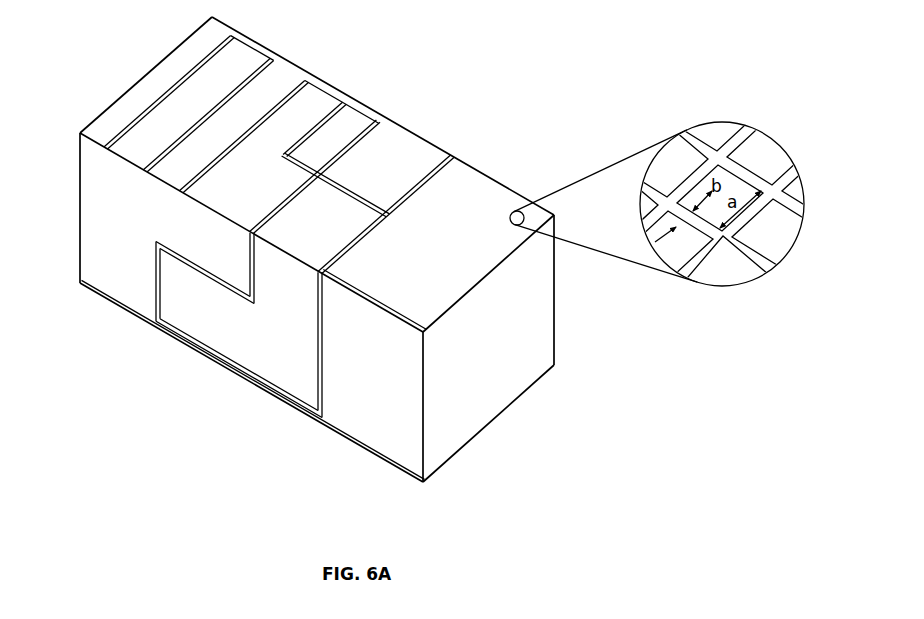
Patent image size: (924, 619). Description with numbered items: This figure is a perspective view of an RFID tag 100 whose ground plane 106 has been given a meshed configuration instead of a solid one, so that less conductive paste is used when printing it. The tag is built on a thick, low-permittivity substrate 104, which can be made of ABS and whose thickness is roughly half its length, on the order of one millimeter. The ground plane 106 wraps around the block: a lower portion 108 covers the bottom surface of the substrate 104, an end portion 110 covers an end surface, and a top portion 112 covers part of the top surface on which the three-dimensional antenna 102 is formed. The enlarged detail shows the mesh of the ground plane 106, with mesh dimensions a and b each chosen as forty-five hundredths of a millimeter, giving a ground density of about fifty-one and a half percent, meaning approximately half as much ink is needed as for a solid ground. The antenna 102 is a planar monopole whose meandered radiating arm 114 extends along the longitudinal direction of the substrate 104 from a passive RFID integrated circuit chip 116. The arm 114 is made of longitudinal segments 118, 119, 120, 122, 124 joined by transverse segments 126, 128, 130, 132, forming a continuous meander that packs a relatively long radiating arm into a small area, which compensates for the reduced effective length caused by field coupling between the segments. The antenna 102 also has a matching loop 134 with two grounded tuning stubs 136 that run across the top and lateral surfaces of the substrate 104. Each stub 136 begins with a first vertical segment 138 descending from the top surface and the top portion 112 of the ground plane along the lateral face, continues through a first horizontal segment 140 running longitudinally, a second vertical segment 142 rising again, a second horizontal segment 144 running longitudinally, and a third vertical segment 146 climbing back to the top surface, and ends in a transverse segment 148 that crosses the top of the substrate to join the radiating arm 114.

The RFID tag 100 is at (516, 112).
The three-dimensional antenna 102 is at (143, 229).
The substrate 104 is at (349, 435).
The ground plane 106 is at (541, 420).
The lower portion of ground plane 108 is at (410, 478).
The end portion of ground plane 110 is at (454, 446).
The top portion of ground plane 112 is at (460, 277).
The meandered radiating arm 114 is at (325, 80).
The passive RFID integrated circuit chip 116 is at (381, 200).
The longitudinal segment 118 is at (350, 198).
The longitudinal segment 119 is at (333, 93).
The longitudinal segment 120 is at (166, 178).
The longitudinal segment 122 is at (256, 43).
The longitudinal segment 124 is at (89, 146).
The transverse segment 126 is at (288, 153).
The transverse segment 128 is at (211, 177).
The transverse segment 130 is at (250, 78).
The transverse segment 132 is at (124, 138).
The matching loop 134 is at (125, 328).
The grounded tuning stub 136 is at (331, 357).
The first vertical segment 138 is at (318, 341).
The first horizontal segment 140 is at (221, 350).
The second vertical segment 142 is at (163, 272).
The second horizontal segment 144 is at (188, 260).
The third vertical segment 146 is at (259, 275).
The transverse segment of tuning stub 148 is at (380, 121).